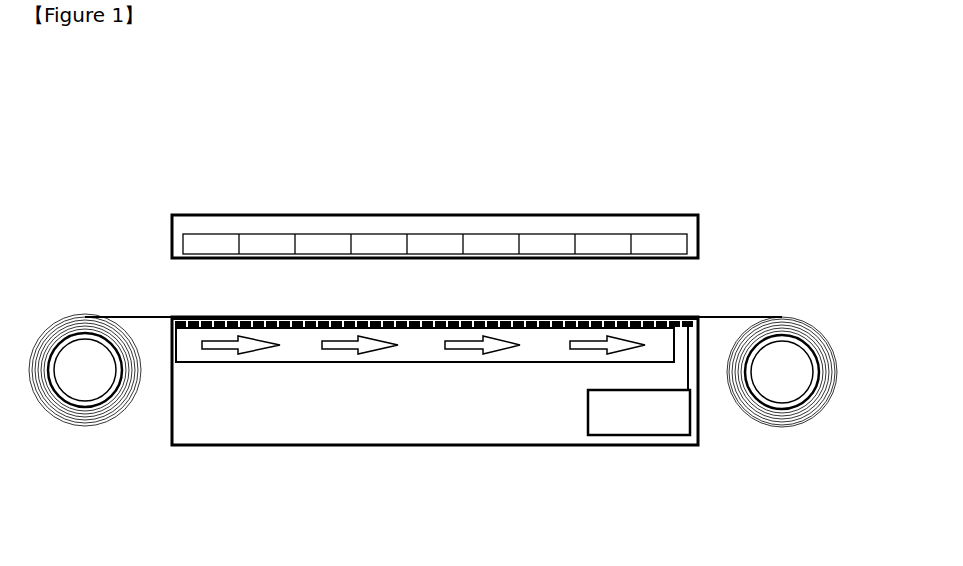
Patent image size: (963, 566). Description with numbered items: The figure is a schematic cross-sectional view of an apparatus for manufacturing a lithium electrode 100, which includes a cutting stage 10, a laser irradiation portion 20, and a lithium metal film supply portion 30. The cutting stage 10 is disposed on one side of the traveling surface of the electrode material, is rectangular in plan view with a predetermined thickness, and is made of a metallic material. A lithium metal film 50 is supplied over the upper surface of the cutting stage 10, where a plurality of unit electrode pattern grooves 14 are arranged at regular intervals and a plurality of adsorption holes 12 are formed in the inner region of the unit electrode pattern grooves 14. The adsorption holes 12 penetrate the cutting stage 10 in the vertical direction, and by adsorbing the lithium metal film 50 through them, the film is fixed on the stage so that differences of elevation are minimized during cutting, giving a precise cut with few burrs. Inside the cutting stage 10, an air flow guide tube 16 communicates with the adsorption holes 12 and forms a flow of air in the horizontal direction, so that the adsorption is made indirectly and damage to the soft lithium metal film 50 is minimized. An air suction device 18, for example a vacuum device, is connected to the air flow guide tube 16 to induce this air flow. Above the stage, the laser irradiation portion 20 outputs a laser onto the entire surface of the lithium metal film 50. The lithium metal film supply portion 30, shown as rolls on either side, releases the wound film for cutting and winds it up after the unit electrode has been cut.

The apparatus for manufacturing a lithium electrode 100 is at (433, 132).
The cutting stage 10 is at (700, 318).
The adsorption hole 12 is at (199, 322).
The unit electrode pattern groove 14 is at (220, 318).
The air flow guide tube 16 is at (297, 347).
The air suction device 18 is at (667, 437).
The laser irradiation portion 20 is at (699, 230).
The lithium metal film supply portion 30 is at (62, 321).
The lithium metal film 50 is at (593, 317).